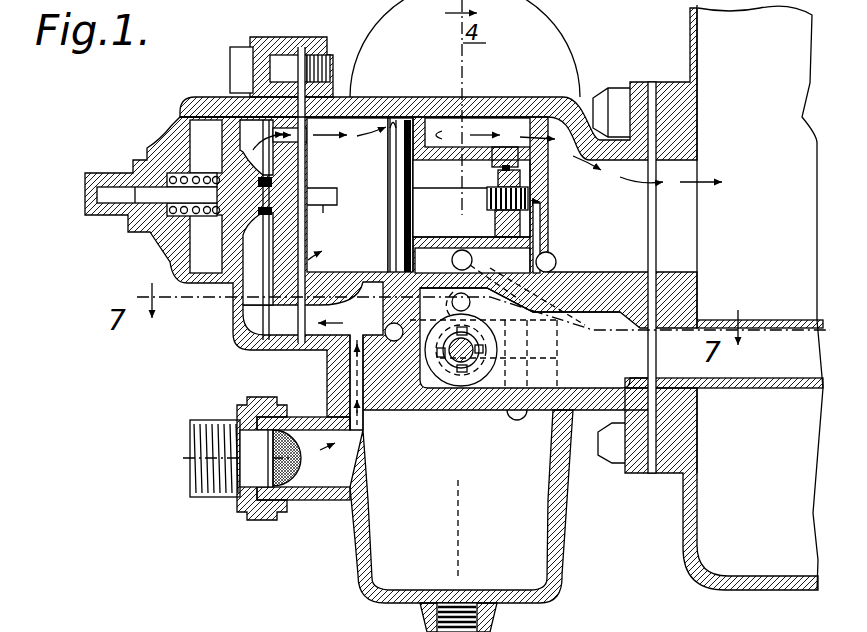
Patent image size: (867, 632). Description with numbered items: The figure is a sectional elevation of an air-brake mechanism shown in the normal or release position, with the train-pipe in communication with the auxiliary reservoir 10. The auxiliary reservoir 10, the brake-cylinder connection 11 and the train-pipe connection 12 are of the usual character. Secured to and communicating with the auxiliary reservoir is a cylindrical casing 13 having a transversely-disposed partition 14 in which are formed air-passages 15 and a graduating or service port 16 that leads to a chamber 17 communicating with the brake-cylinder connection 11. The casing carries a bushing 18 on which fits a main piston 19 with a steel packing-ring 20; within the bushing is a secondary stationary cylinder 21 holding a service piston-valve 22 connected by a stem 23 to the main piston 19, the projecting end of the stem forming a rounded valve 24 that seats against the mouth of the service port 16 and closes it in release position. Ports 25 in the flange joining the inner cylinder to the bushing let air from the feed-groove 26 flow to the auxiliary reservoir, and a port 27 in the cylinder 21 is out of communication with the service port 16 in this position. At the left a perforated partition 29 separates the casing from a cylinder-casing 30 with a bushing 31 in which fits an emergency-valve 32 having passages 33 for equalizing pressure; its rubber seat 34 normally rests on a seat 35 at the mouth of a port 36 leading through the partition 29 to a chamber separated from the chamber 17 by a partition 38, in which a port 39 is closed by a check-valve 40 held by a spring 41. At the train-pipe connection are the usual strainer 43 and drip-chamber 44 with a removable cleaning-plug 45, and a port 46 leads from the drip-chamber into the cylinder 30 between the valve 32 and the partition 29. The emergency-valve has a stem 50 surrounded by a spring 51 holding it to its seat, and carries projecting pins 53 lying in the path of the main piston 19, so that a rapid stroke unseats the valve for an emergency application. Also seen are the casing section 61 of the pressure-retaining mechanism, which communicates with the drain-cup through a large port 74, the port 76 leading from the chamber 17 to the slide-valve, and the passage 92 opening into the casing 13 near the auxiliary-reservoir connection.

The auxiliary reservoir 10 is at (710, 297).
The brake-cylinder connection 11 is at (777, 319).
The train-pipe connection 12 is at (197, 420).
The cylindrical casing 13 is at (490, 96).
The transversely-disposed partition 14 is at (550, 170).
The air-passages 15 is at (545, 136).
The graduating or service port 16 is at (540, 240).
The chamber 17 is at (520, 321).
The bushing 18 is at (453, 115).
The main piston 19 is at (390, 160).
The steel packing-ring 20 is at (396, 176).
The secondary stationary cylinder 21 is at (471, 225).
The service piston-valve 22 is at (503, 229).
The stem 23 is at (438, 190).
The rounded valve 24 is at (541, 202).
The port or ports 25 is at (477, 132).
The feed-groove 26 is at (397, 116).
The port 27 is at (493, 156).
The perforated partition 29 is at (293, 37).
The cylinder-casing 30 is at (178, 115).
The bushing 31 is at (212, 115).
The emergency-valve 32 is at (222, 157).
The passages 33 is at (243, 258).
The rubber seat 34 is at (262, 186).
The seat 35 is at (267, 222).
The port 36 is at (274, 193).
The partition 38 is at (432, 380).
The port 39 is at (483, 353).
The check-valve 40 is at (470, 343).
The spring 41 is at (480, 350).
The strainer 43 is at (312, 457).
The drip-chamber 44 is at (461, 506).
The removable cleaning-plug 45 is at (458, 602).
The port 46 is at (350, 375).
The stem 50 is at (147, 200).
The spring 51 is at (168, 217).
The projecting pins 53 is at (323, 205).
The casing section 61 is at (546, 40).
The large port 74 is at (520, 418).
The port 76 is at (452, 302).
The passage 92 is at (556, 264).